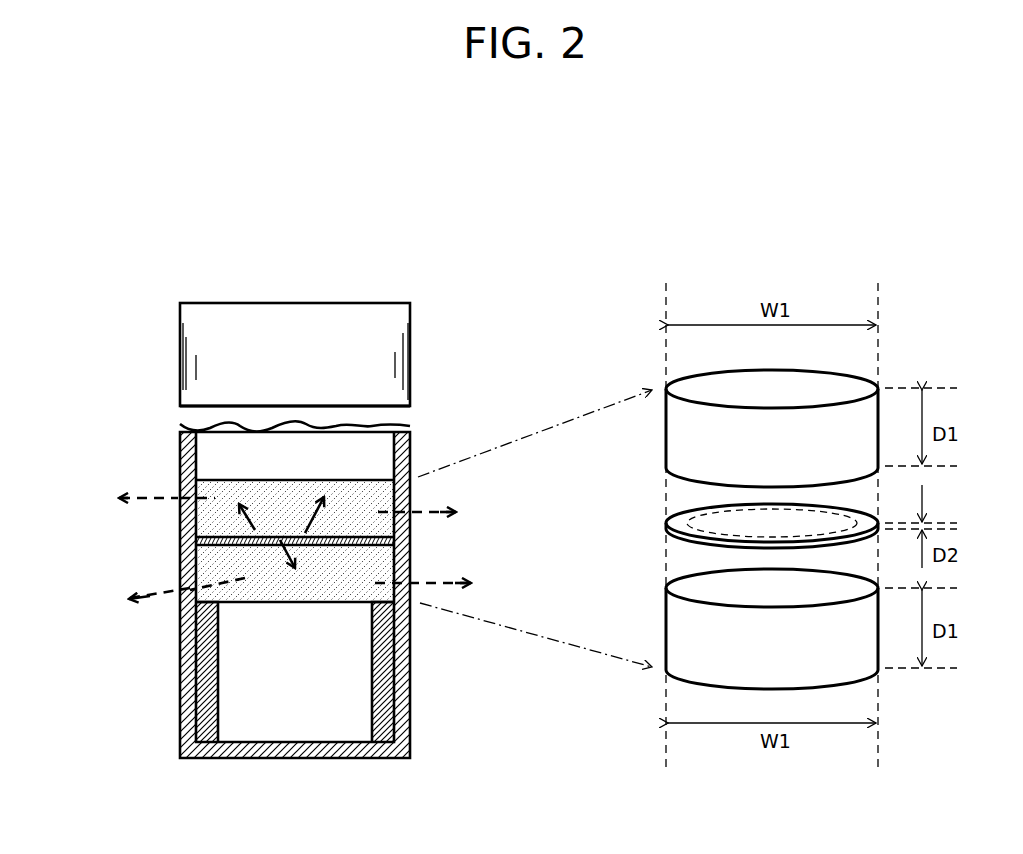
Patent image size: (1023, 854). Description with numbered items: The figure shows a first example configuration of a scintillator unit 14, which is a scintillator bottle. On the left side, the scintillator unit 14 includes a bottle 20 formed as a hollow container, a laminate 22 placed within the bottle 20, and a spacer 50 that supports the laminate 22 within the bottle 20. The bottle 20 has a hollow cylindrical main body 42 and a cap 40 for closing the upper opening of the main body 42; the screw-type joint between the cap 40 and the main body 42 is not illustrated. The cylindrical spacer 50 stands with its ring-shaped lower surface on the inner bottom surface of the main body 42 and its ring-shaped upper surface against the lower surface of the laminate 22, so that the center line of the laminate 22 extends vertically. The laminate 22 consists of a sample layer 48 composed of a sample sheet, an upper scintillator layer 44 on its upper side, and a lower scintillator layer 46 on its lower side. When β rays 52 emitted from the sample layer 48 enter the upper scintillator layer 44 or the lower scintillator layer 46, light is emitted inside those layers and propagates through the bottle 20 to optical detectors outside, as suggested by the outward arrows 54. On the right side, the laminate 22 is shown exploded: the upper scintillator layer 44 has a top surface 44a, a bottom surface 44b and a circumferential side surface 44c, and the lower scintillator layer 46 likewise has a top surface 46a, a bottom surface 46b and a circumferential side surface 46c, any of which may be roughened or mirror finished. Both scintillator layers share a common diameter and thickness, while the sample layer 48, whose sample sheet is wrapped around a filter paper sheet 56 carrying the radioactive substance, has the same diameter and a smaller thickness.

The scintillator unit 14 is at (300, 284).
The bottle 20 is at (201, 297).
The laminate 22 is at (304, 460).
The cap 40 is at (179, 346).
The main body 42 is at (180, 718).
The upper scintillator layer 44 is at (247, 480).
The top surface 44a is at (768, 375).
The bottom surface 44b is at (688, 482).
The circumferential side surface 44c is at (662, 410).
The lower scintillator layer 46 is at (222, 603).
The top surface 46a is at (700, 584).
The bottom surface 46b is at (775, 684).
The circumferential side surface 46c is at (686, 648).
The sample layer 48 is at (243, 548).
The spacer 50 is at (390, 688).
The β rays 52 is at (367, 507).
The gas flow 54 is at (428, 583).
The filter paper sheet 56 is at (853, 503).